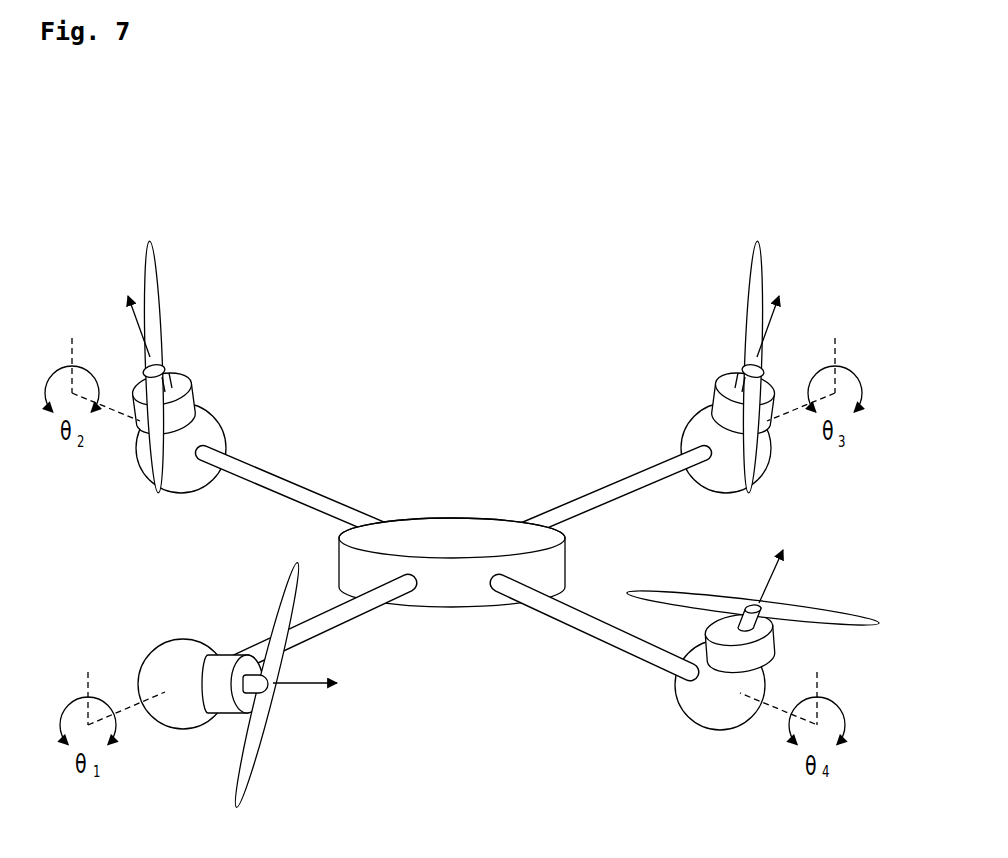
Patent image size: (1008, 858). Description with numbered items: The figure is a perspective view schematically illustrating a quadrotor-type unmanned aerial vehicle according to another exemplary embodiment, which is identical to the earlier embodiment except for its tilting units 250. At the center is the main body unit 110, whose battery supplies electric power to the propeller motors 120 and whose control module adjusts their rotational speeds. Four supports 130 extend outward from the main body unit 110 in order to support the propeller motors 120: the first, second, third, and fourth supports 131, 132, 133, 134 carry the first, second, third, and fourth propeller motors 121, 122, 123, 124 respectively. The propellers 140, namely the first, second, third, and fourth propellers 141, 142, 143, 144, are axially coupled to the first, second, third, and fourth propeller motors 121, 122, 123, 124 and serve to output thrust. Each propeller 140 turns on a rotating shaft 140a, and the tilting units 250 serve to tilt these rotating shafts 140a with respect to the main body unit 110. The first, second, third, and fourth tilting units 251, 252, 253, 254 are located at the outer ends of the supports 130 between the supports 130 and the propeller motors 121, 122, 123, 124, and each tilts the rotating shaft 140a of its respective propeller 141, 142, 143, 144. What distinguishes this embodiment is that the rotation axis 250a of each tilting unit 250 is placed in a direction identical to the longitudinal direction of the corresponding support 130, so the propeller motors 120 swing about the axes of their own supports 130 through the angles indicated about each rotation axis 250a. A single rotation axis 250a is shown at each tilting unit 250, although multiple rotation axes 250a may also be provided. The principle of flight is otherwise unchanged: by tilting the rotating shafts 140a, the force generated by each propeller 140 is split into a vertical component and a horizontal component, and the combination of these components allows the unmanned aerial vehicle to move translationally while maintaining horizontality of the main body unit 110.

The main body unit 110 is at (453, 530).
The propeller motors 120 is at (245, 614).
The first propeller motor 121 is at (225, 663).
The second propeller motor 122 is at (183, 397).
The third propeller motor 123 is at (717, 397).
The fourth propeller motor 124 is at (762, 652).
The supports 130 is at (326, 632).
The first support 131 is at (363, 603).
The second support 132 is at (340, 510).
The third support 133 is at (580, 507).
The fourth support 134 is at (543, 603).
The propellers 140 is at (316, 685).
The rotating shaft 140a is at (160, 380).
The first propeller 141 is at (250, 758).
The second propeller 142 is at (150, 270).
The third propeller 143 is at (758, 266).
The fourth propeller 144 is at (817, 617).
The tilting units 250 is at (170, 640).
The rotation axis 250a is at (110, 413).
The first tilting unit 251 is at (170, 648).
The second tilting unit 252 is at (220, 430).
The third tilting unit 253 is at (690, 430).
The fourth tilting unit 254 is at (685, 695).